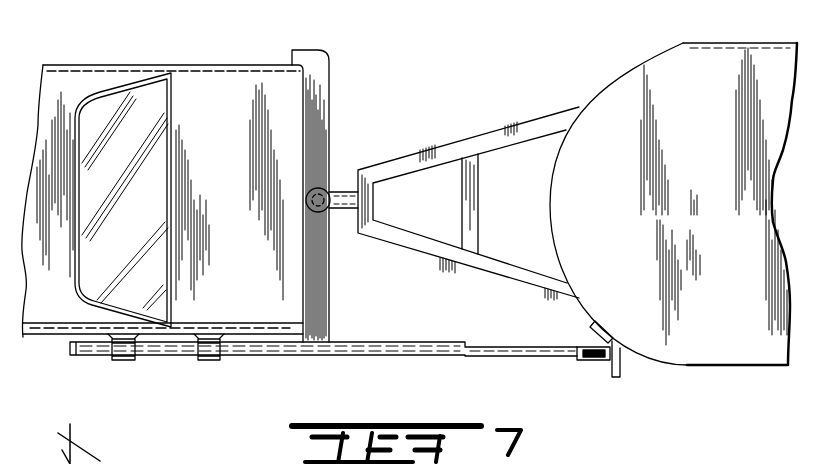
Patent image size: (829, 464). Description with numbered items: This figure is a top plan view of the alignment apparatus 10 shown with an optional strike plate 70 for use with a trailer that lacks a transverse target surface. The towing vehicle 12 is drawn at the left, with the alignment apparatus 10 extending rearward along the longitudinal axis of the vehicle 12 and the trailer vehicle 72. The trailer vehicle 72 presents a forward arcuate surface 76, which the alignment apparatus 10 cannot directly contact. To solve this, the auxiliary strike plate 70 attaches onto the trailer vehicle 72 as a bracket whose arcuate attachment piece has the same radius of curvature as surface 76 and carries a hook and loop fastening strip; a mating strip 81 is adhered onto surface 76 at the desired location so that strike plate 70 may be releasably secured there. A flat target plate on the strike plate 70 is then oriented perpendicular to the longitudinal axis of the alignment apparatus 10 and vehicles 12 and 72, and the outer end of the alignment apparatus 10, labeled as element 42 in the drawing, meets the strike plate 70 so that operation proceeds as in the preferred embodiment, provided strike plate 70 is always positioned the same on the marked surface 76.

The alignment apparatus 10 is at (343, 363).
The vehicle 12 is at (121, 88).
The coupling member 42 is at (587, 364).
The strike plate 70 is at (618, 373).
The trailer vehicle 72 is at (688, 60).
The forward arcuate surface 76 is at (551, 190).
The mating strip 81 is at (601, 327).